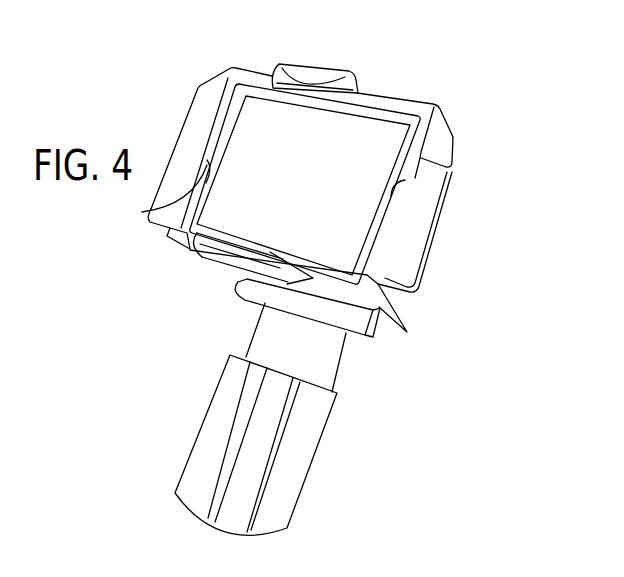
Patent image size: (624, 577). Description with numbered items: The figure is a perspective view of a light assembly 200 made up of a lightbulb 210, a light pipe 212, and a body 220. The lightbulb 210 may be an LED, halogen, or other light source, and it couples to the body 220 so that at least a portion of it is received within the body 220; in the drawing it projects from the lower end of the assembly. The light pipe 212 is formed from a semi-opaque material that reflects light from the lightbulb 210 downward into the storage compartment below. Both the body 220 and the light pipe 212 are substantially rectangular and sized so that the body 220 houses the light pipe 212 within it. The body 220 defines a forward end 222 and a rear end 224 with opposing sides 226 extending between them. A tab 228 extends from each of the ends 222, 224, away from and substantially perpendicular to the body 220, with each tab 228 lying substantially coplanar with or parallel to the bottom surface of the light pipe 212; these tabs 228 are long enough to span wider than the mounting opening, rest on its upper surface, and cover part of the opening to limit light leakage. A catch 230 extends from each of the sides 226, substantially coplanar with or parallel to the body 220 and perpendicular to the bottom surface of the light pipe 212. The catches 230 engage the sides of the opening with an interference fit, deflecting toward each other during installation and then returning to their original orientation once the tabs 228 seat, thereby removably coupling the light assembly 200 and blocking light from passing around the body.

The light assembly 200 is at (489, 86).
The lightbulb 210 is at (300, 463).
The light pipe 212 is at (363, 166).
The body 220 is at (393, 313).
The forward end 222 is at (405, 180).
The rear end 224 is at (142, 212).
The opposing sides 226 is at (402, 106).
The tab 228 is at (200, 107).
The catch 230 is at (303, 82).